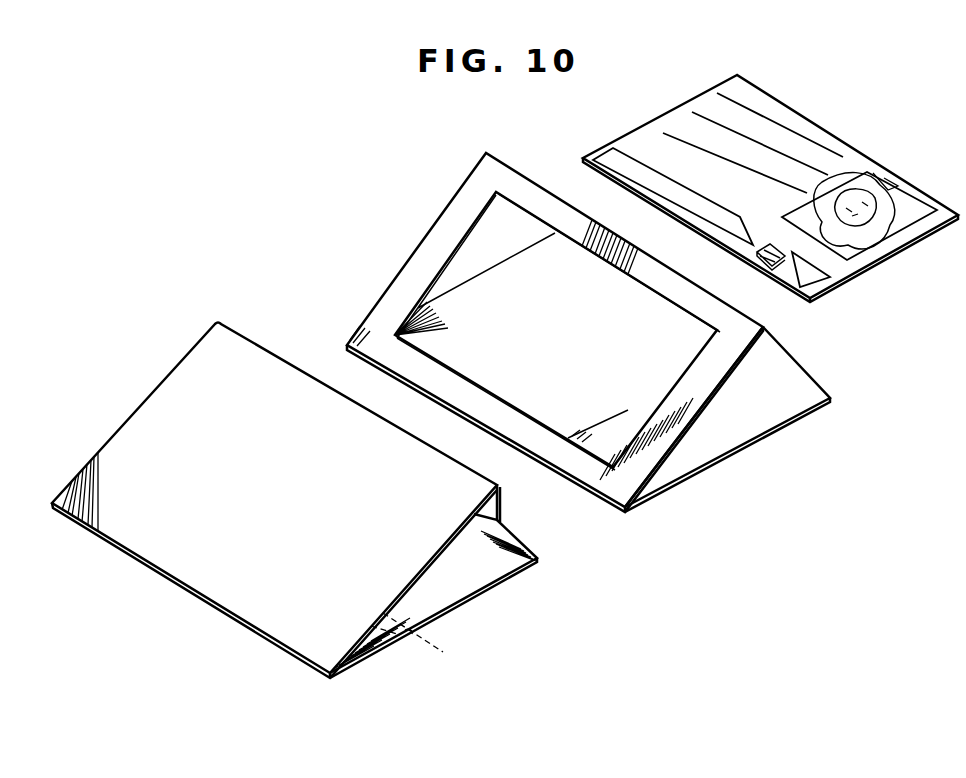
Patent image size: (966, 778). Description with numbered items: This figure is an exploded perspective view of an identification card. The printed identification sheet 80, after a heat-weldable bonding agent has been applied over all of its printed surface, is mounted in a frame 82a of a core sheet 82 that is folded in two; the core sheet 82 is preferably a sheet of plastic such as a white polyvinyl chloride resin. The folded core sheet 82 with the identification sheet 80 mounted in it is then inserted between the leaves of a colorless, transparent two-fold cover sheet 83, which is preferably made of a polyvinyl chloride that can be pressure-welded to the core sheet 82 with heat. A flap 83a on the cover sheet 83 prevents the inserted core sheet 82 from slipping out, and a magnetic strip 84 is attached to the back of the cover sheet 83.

The identification sheet 80 is at (857, 158).
The core sheet 82 is at (780, 392).
The frame 82a is at (663, 390).
The cover sheet 83 is at (207, 593).
The flap 83a is at (501, 512).
The magnetic strip 84 is at (420, 641).